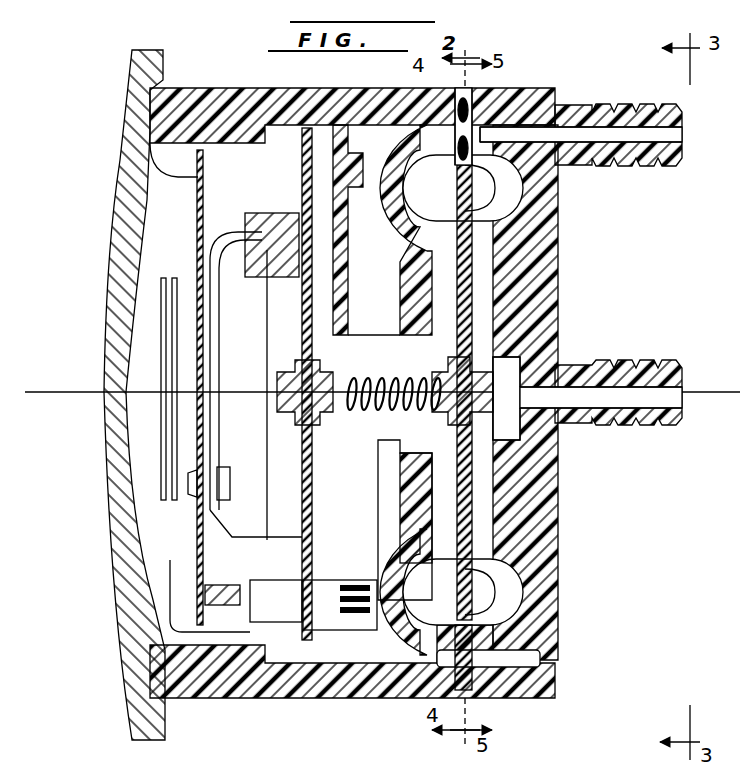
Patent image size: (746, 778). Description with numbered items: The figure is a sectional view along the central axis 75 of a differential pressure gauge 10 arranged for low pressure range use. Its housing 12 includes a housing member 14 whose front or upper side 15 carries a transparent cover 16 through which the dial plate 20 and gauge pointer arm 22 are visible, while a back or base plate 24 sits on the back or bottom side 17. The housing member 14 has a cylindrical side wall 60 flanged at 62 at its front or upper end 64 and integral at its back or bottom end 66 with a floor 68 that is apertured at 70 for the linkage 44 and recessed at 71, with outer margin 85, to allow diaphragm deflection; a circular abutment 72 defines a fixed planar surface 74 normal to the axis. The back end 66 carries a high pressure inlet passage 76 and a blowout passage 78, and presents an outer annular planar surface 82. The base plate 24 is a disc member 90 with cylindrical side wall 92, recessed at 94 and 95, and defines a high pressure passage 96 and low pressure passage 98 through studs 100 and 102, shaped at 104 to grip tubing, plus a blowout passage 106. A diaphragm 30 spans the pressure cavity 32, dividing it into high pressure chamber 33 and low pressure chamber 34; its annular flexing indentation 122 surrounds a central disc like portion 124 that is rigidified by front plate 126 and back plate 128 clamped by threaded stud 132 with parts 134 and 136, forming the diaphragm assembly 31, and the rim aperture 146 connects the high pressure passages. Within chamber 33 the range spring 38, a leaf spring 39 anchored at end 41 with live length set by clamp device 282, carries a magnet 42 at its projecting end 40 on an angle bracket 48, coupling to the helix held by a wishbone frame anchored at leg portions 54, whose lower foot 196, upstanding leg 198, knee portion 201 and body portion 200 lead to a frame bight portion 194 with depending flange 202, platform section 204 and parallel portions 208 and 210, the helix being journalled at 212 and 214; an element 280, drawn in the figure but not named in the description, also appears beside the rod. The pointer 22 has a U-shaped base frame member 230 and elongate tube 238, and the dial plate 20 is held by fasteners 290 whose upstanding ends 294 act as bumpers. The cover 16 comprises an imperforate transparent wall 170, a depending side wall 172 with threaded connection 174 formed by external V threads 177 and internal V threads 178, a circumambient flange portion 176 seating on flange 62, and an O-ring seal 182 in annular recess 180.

The differential pressure gauge 10 is at (96, 640).
The housing 12 is at (120, 706).
The housing member 14 is at (336, 700).
The front or upper side 15 is at (146, 96).
The transparent cover 16 is at (106, 470).
The back or bottom side 17 is at (480, 682).
The dial plate 20 is at (192, 216).
The gauge pointer arm 22 is at (162, 326).
The back or base plate 24 is at (568, 272).
The diaphragm 30 is at (516, 596).
The diaphragm assembly 31 is at (540, 556).
The pressure cavity 32 is at (382, 652).
The high pressure chamber 33 is at (400, 662).
The low pressure chamber 34 is at (558, 494).
The range spring 38 is at (262, 122).
The leaf spring 39 is at (232, 335).
The projecting end of leaf spring 40 is at (312, 486).
The end of leaf spring 41 is at (292, 128).
The magnet 42 is at (282, 642).
The linkage 44 is at (388, 358).
The angle bracket 48 is at (290, 484).
The leg portions 54 is at (276, 206).
The cylindrical side wall 60 is at (210, 88).
The flange 62 is at (155, 50).
The front or upper end 64 is at (206, 700).
The back or bottom end 66 is at (462, 114).
The floor 68 is at (366, 232).
The aperture 70 is at (410, 426).
The recess 71 is at (436, 162).
The circular abutment 72 is at (346, 650).
The fixed planar surface 74 is at (320, 642).
The central axis 75 is at (272, 366).
The high pressure inlet passage 76 is at (440, 130).
The blowout passage 78 is at (450, 650).
The outer annular planar surface 82 is at (482, 105).
The outer margin of recess 85 is at (450, 600).
The disc member 90 is at (548, 100).
The cylindrical side wall of disc member 92 is at (520, 100).
The recess 94 is at (504, 306).
The recess 95 is at (556, 192).
The high pressure passage 96 is at (578, 130).
The low pressure passage 98 is at (598, 420).
The high pressure stud 100 is at (626, 118).
The low pressure stud 102 is at (660, 365).
The stud shaping 104 is at (652, 162).
The blowout passage 106 is at (546, 660).
The annular flexing indentation 122 is at (560, 230).
The central disc like portion 124 is at (492, 480).
The front plate 126 is at (482, 550).
The back plate 128 is at (478, 532).
The threaded stud 132 is at (506, 440).
The stud associated part 134 is at (496, 346).
The stud associated part 136 is at (530, 346).
The aperture 146 is at (444, 152).
The imperforate transparent wall 170 is at (120, 300).
The depending side wall 172 is at (234, 690).
The threaded connection 174 is at (178, 690).
The circumambient flange portion 176 is at (130, 74).
The external V threads 177 is at (150, 172).
The internal V threads 178 is at (180, 70).
The annular recess 180 is at (218, 72).
The O-ring seal 182 is at (266, 650).
The frame bight portion 194 is at (200, 556).
The lower foot 196 is at (292, 294).
The upstanding leg 198 is at (238, 212).
The body portion 200 is at (252, 386).
The knee portion 201 is at (205, 200).
The depending flange 202 is at (246, 540).
The platform section 204 is at (316, 540).
The platform portion 208 is at (326, 582).
The platform portion 210 is at (300, 642).
The journalling device 212 is at (200, 596).
The journalling device 214 is at (360, 594).
The U-shaped base frame member 230 is at (150, 642).
The elongate tube 238 is at (150, 380).
The rod 280 is at (474, 256).
The clamp device 282 is at (186, 296).
The fasteners 290 is at (150, 492).
The upstanding ends 294 is at (136, 460).